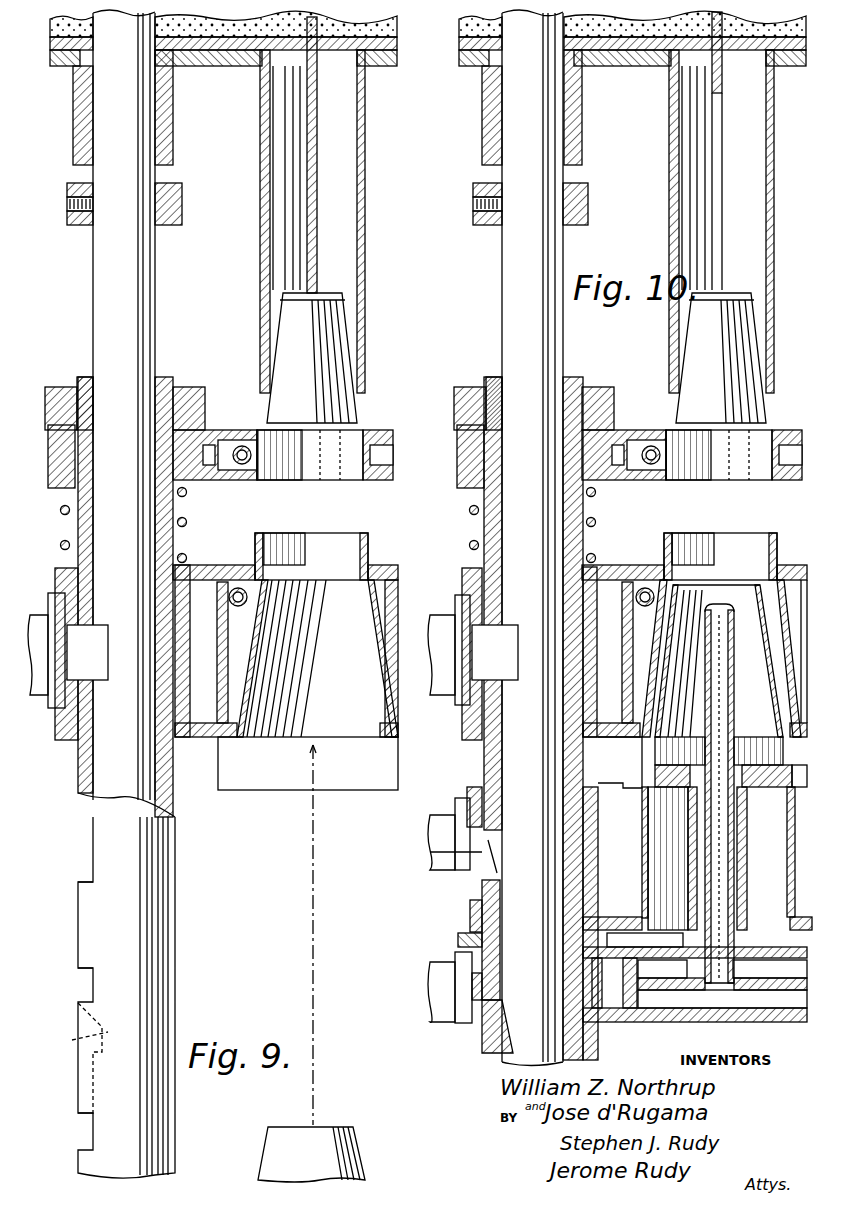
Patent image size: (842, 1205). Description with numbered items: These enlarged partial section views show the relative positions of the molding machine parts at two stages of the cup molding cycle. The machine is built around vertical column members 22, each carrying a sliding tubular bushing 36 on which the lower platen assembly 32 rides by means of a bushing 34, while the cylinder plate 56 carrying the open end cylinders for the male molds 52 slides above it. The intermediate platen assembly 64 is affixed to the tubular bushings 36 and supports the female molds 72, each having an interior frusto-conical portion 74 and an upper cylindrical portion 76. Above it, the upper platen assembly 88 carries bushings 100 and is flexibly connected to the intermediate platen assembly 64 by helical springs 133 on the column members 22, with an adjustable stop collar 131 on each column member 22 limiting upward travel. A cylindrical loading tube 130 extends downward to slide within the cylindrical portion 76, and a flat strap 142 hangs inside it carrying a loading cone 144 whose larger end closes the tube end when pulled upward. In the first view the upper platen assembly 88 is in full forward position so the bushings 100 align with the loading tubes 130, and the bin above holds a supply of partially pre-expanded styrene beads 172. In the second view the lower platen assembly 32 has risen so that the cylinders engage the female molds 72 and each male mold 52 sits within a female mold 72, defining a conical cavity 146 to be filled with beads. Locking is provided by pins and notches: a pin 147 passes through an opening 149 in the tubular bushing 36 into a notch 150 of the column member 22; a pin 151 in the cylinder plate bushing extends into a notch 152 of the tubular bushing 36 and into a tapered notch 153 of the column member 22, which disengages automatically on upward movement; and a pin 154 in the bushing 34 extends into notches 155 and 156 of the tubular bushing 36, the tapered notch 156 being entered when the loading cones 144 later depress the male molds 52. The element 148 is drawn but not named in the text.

In FIG. 9, the column member 22 is at (93, 291).
In FIG. 10, the column member 22 is at (502, 277).
In FIG. 10, the lower platen assembly 32 is at (669, 1029).
In FIG. 10, the bushing 34 is at (608, 1003).
In FIG. 9, the tubular bushing 36 is at (176, 925).
In FIG. 9, the male mold 52 is at (362, 1148).
In FIG. 10, the male mold 52 is at (656, 576).
In FIG. 10, the cylinder plate 56 is at (470, 916).
In FIG. 9, the intermediate platen assembly 64 is at (205, 755).
In FIG. 10, the intermediate platen assembly 64 is at (455, 569).
In FIG. 9, the female mold 72 is at (382, 742).
In FIG. 10, the female mold 72 is at (642, 695).
In FIG. 9, the frusto-conical portion 74 is at (386, 661).
In FIG. 9, the cylindrical portion 76 is at (355, 538).
In FIG. 9, the upper platen assembly 88 is at (229, 490).
In FIG. 10, the upper platen assembly 88 is at (452, 486).
In FIG. 9, the bushing 100 is at (367, 430).
In FIG. 10, the bushing 100 is at (676, 470).
In FIG. 9, the loading tube 130 is at (358, 230).
In FIG. 10, the stop collar 131 is at (580, 209).
In FIG. 9, the helical spring 133 is at (187, 524).
In FIG. 10, the helical spring 133 is at (596, 520).
In FIG. 9, the strap 142 is at (316, 152).
In FIG. 9, the loading cone 144 is at (350, 333).
In FIG. 10, the loading cone 144 is at (690, 402).
In FIG. 10, the conical cavity 146 is at (760, 650).
In FIG. 9, the pin 147 is at (72, 680).
In FIG. 10, the pin 147 is at (506, 668).
In FIG. 9, the block 148 is at (70, 680).
In FIG. 10, the block 148 is at (470, 620).
In FIG. 9, the opening 149 is at (75, 608).
In FIG. 10, the opening 149 is at (490, 622).
In FIG. 9, the notch 150 is at (93, 622).
In FIG. 10, the notch 150 is at (510, 627).
In FIG. 10, the pin 151 is at (428, 852).
In FIG. 9, the notch 152 is at (85, 838).
In FIG. 10, the notch 152 is at (497, 830).
In FIG. 9, the notch 153 is at (72, 1040).
In FIG. 10, the notch 153 is at (507, 1040).
In FIG. 10, the pin 154 is at (488, 985).
In FIG. 9, the notch 155 is at (78, 969).
In FIG. 10, the notch 155 is at (458, 942).
In FIG. 9, the notch 156 is at (78, 1122).
In FIG. 9, the partially pre-expanded styrene beads 172 is at (398, 40).